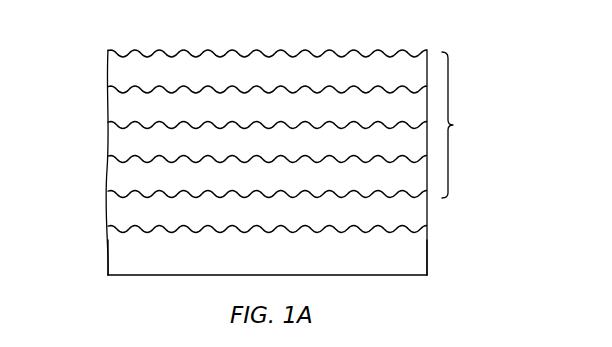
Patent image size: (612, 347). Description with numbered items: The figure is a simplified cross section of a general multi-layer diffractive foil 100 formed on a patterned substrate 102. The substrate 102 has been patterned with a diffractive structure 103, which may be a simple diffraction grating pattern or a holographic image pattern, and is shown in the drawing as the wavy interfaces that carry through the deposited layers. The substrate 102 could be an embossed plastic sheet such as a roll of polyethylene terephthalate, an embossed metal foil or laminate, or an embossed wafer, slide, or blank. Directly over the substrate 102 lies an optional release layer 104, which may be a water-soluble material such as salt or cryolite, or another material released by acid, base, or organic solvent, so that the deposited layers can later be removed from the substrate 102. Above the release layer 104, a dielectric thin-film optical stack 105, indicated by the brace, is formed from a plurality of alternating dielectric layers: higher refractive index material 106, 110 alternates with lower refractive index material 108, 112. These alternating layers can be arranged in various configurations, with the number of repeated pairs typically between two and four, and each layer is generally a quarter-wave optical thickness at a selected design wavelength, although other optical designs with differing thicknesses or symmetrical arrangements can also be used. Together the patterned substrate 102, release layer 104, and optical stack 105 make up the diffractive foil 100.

The multi-layer diffractive foil 100 is at (474, 50).
The substrate 102 is at (421, 248).
The diffractive structure 103 is at (398, 220).
The release layer 104 is at (112, 211).
The dielectric thin-film optical stack 105 is at (465, 125).
The higher refractive index material layer 106 is at (112, 177).
The lower refractive index material layer 108 is at (112, 142).
The higher refractive index material layer 110 is at (112, 107).
The lower refractive index material layer 112 is at (112, 72).